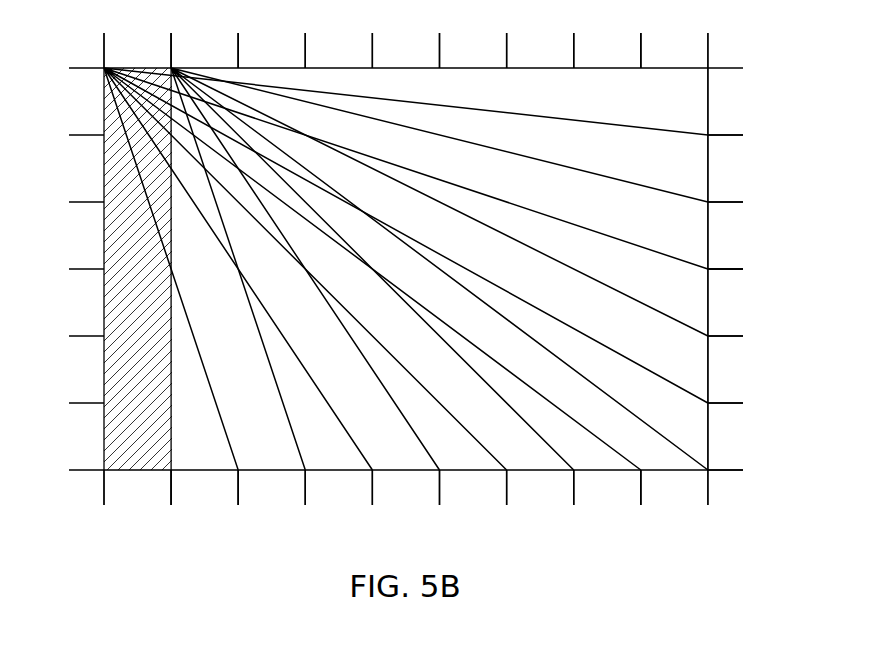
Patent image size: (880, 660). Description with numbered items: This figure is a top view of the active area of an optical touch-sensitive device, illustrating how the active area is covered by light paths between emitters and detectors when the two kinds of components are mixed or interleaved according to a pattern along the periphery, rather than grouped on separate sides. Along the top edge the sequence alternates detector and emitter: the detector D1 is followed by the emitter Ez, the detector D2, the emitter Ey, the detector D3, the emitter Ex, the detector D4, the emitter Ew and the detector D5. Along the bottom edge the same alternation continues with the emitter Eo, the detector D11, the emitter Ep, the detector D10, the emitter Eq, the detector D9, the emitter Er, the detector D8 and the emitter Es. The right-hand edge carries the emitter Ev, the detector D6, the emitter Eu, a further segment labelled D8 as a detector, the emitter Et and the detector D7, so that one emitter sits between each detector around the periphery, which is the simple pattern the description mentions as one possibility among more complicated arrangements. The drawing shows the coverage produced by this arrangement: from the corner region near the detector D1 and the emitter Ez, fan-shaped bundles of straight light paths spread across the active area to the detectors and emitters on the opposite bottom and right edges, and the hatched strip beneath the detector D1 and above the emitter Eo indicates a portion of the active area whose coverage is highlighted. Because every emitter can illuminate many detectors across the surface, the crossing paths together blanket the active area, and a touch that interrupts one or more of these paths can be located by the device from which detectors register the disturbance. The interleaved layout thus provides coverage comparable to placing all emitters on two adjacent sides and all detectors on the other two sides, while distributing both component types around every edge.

The detector D1 is at (137, 50).
The emitter Ez is at (204, 50).
The detector D2 is at (271, 50).
The emitter Ey is at (338, 50).
The detector D3 is at (405, 50).
The emitter Ex is at (473, 50).
The detector D4 is at (540, 50).
The emitter Ew is at (607, 50).
The detector D5 is at (674, 50).
The emitter Eo is at (137, 487).
The detector D11 is at (204, 487).
The emitter Ep is at (271, 487).
The detector D10 is at (338, 487).
The emitter Eq is at (405, 487).
The detector D9 is at (473, 487).
The emitter Er is at (540, 487).
The detector D8 is at (666, 387).
The emitter Es is at (674, 487).
The emitter Ev is at (731, 101).
The detector D6 is at (733, 168).
The emitter Eu is at (731, 235).
The emitter Et is at (729, 369).
The detector D7 is at (733, 436).